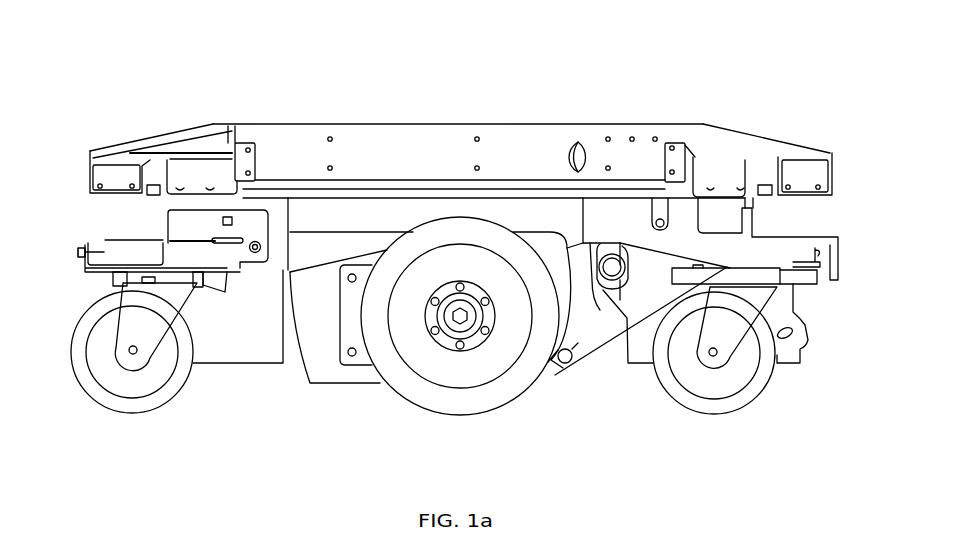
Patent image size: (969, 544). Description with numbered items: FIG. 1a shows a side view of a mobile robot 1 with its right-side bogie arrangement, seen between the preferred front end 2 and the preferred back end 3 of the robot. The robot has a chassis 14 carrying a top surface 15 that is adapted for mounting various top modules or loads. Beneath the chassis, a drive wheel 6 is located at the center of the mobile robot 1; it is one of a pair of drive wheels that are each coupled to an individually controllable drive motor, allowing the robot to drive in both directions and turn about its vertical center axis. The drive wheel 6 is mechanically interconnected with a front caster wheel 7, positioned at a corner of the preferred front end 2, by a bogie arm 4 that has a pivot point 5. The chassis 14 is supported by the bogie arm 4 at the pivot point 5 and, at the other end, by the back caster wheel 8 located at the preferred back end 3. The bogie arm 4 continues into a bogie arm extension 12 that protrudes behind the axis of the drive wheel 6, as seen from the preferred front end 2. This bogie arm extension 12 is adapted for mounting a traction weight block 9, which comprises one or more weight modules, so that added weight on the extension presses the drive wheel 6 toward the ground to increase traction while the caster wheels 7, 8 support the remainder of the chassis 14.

The mobile robot 1 is at (115, 92).
The preferred front-end of the mobile robot 2 is at (785, 142).
The preferred back-end of the mobile robot 3 is at (95, 150).
The bogie arm 4 is at (582, 303).
The pivot point of the bogie arm 5 is at (612, 281).
The drive wheel 6 is at (484, 355).
The front caster wheel 7 is at (748, 357).
The back caster wheel 8 is at (165, 372).
The traction weight block 9 is at (322, 353).
The bogie arm extension 12 is at (363, 357).
The chassis of the robot 14 is at (363, 160).
The top of the robot 15 is at (497, 125).